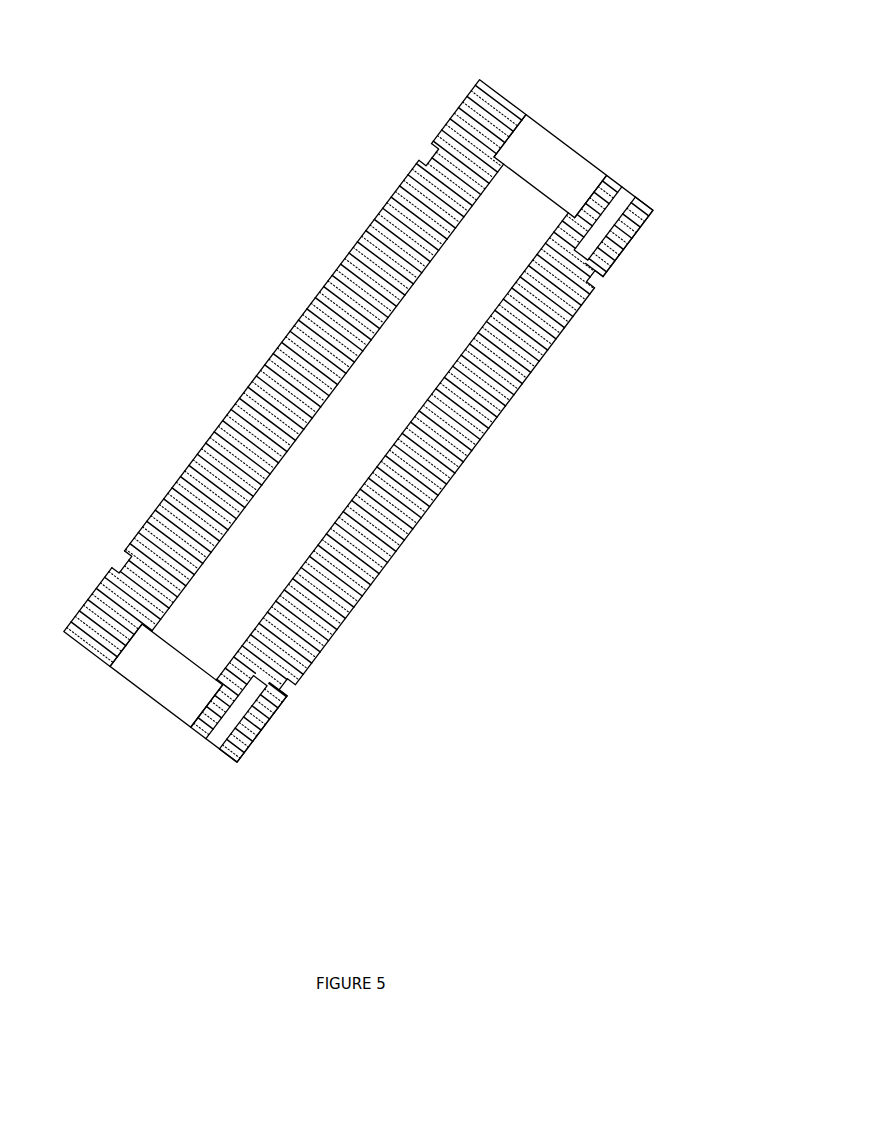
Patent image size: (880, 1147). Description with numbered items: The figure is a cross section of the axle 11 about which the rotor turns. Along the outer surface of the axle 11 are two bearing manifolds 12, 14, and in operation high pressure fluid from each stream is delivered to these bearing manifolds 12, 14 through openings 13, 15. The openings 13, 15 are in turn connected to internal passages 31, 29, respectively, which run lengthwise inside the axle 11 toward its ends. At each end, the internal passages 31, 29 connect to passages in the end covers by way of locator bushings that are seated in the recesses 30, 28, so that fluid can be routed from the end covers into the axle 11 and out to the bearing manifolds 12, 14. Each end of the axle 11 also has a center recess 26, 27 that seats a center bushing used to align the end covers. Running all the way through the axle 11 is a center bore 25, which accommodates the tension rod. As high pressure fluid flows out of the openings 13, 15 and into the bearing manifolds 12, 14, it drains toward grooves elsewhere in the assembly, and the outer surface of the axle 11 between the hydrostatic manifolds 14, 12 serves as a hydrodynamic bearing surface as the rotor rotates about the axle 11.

The axle 11 is at (290, 380).
The bearing manifold 12 is at (120, 566).
The opening 13 is at (286, 686).
The bearing manifold 14 is at (430, 148).
The opening 15 is at (593, 286).
The center bore 25 is at (370, 435).
The center recess 26 is at (163, 695).
The center recess 27 is at (538, 157).
The recess 28 is at (628, 202).
The internal passage 29 is at (595, 250).
The recess 30 is at (232, 740).
The internal passage 31 is at (250, 738).